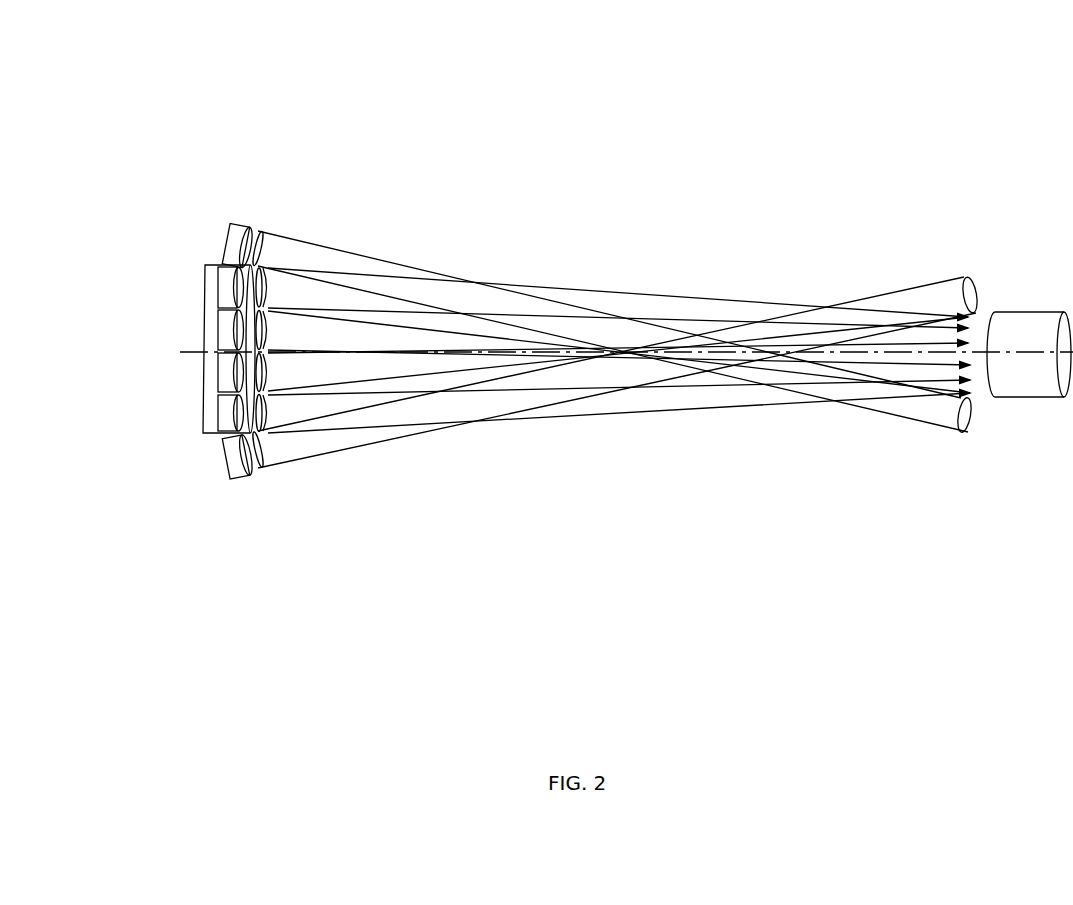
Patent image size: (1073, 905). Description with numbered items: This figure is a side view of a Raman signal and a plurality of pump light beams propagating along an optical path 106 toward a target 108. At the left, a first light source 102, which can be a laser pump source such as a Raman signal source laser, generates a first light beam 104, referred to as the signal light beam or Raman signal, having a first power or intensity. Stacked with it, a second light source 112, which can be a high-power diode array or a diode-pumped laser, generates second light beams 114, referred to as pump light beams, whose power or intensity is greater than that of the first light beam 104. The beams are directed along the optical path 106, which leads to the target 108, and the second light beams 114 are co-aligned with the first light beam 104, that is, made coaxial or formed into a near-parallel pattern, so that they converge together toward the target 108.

The first light source 102 is at (207, 317).
The first light beam 104 is at (383, 328).
The optical path 106 is at (430, 352).
The target 108 is at (1042, 322).
The second light source 112 is at (225, 327).
The second light beam 114 is at (322, 320).